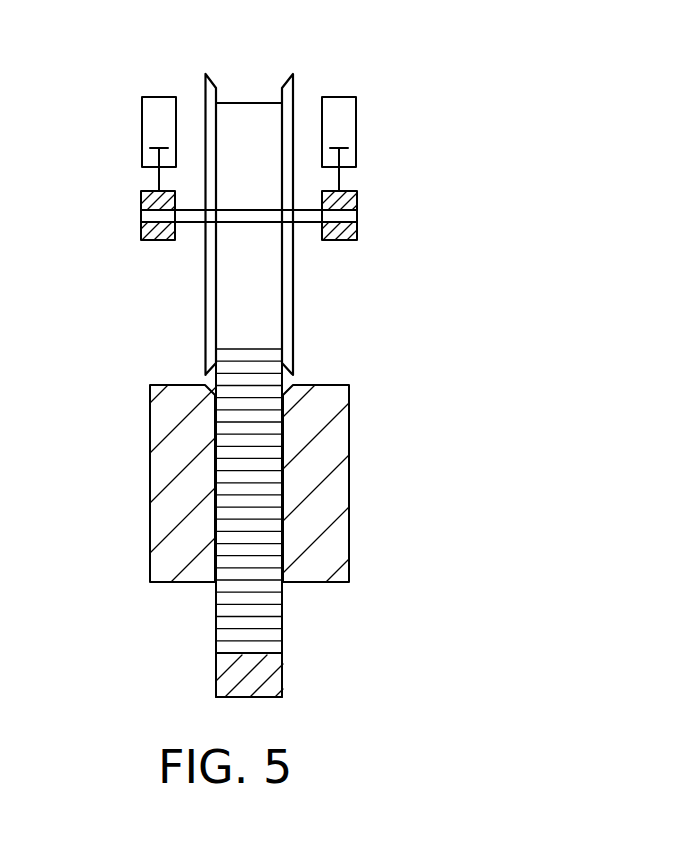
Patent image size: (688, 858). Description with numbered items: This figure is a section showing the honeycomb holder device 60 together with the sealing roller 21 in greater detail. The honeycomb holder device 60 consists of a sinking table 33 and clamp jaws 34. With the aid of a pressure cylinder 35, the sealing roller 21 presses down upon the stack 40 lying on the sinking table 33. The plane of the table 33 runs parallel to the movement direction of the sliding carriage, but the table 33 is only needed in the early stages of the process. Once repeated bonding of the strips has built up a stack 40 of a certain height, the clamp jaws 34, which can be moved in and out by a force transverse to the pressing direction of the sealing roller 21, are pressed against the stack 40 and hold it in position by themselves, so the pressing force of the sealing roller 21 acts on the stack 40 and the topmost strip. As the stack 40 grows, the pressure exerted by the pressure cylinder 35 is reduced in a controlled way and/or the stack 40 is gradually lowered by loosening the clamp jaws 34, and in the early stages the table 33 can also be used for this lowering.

The sealing roller 21 is at (250, 112).
The pressure cylinder 35 is at (157, 126).
The clamp jaws 34 is at (185, 448).
The honeycomb holder device 60 is at (357, 507).
The stack 40 is at (270, 607).
The sinking table 33 is at (273, 680).